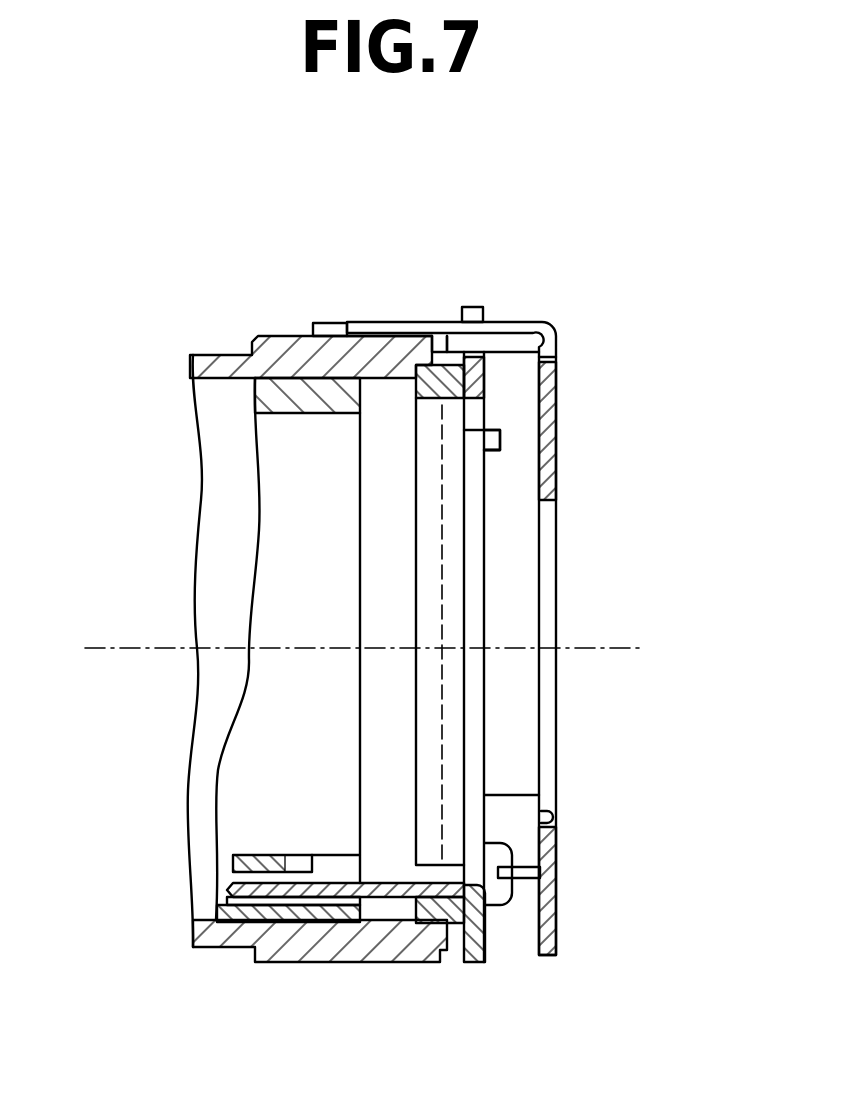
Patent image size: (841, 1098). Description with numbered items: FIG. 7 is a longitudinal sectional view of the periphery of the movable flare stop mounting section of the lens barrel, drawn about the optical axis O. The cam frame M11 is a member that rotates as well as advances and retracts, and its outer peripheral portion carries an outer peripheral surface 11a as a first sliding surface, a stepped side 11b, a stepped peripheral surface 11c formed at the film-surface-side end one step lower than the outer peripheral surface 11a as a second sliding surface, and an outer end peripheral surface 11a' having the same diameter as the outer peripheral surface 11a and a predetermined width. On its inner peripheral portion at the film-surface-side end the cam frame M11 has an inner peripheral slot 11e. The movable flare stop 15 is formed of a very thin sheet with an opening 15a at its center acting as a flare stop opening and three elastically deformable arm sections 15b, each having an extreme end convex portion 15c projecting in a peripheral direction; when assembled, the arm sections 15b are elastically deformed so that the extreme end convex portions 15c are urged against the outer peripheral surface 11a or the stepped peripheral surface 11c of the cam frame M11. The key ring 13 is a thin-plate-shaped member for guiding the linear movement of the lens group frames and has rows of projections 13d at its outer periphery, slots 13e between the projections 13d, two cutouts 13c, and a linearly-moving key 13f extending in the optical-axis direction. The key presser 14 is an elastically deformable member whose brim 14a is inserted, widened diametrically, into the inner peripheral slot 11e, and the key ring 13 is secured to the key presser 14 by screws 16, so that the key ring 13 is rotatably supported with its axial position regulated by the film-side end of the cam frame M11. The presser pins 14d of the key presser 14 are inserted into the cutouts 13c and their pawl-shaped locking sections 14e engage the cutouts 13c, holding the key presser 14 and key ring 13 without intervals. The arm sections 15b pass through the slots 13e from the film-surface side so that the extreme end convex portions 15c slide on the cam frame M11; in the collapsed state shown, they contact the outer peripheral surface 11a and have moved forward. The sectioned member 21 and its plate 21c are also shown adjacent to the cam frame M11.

The cam frame M11 is at (205, 352).
The outer peripheral surface 11a is at (311, 293).
The outer end peripheral surface 11a' is at (469, 244).
The stepped side 11b is at (407, 335).
The stepped peripheral surface 11c is at (448, 336).
The extreme end convex portion 15c is at (333, 322).
The movable flare stop 15 is at (557, 728).
The arm section 15b is at (556, 336).
The opening 15a is at (545, 815).
The projections 13d is at (487, 313).
The slots 13e is at (470, 357).
The key ring 13 is at (475, 738).
The cutouts 13c is at (463, 438).
The presser pin 14d is at (500, 440).
The locking section 14e is at (500, 450).
The key presser 14 is at (455, 692).
The brim 14a is at (395, 963).
The inner peripheral slot 11e is at (395, 963).
The lens barrel sleeve 21 is at (262, 410).
The plate of lens barrel 21c is at (313, 910).
The linearly-moving key 13f is at (280, 872).
The screws 16 is at (507, 907).
The optical axis O is at (110, 646).